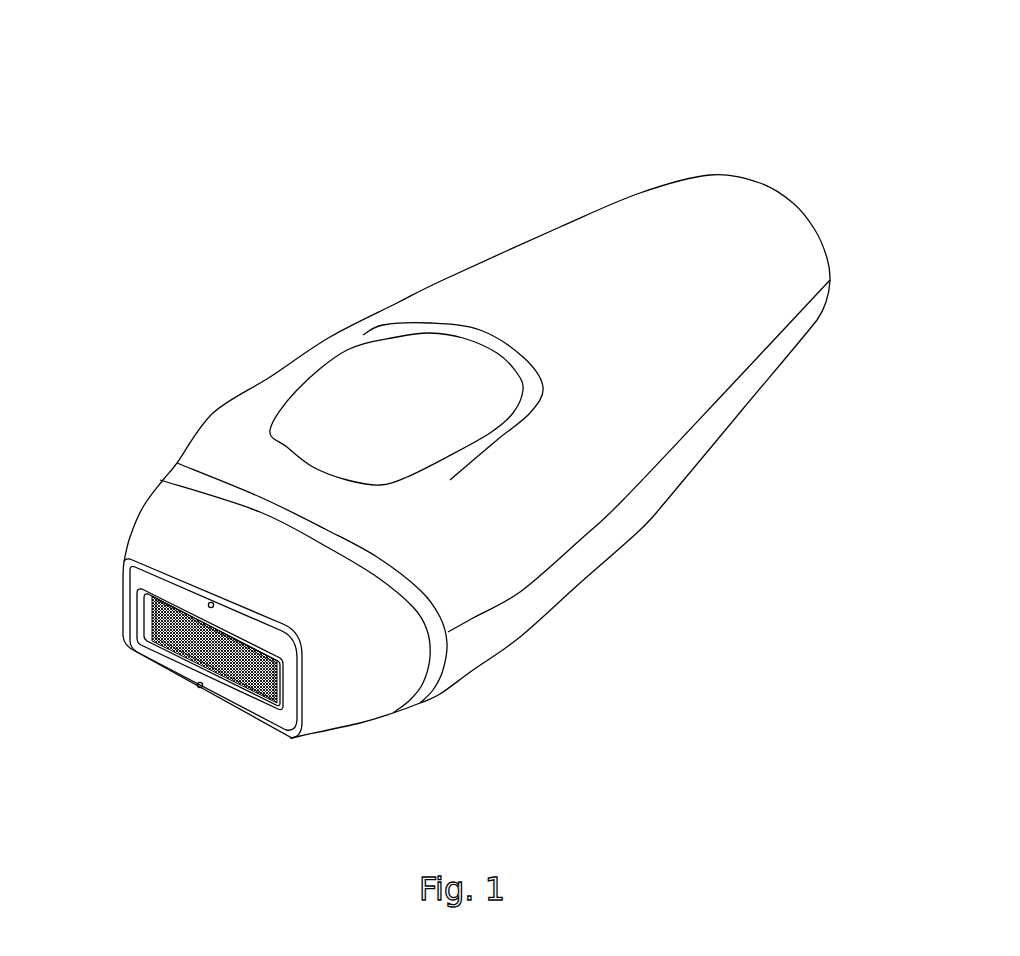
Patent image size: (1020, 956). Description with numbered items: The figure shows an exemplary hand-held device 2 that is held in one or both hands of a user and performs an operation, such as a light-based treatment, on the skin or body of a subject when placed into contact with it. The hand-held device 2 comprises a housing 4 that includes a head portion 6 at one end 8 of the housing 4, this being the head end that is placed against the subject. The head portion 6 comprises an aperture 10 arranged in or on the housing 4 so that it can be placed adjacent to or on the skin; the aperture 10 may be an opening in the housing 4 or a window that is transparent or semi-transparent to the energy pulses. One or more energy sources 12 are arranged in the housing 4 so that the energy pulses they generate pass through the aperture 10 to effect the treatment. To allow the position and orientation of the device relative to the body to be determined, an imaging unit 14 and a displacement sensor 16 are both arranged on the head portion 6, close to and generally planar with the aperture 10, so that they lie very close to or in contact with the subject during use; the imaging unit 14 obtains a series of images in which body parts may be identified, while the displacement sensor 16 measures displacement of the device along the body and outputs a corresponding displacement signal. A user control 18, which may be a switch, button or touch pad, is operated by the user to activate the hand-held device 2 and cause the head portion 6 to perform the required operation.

The hand-held device 2 is at (377, 140).
The housing 4 is at (733, 322).
The head portion 6 is at (146, 622).
The end 8 is at (373, 688).
The aperture 10 is at (175, 638).
The energy sources 12 is at (230, 667).
The imaging unit 14 is at (208, 602).
The displacement sensor 16 is at (197, 687).
The user control 18 is at (347, 397).